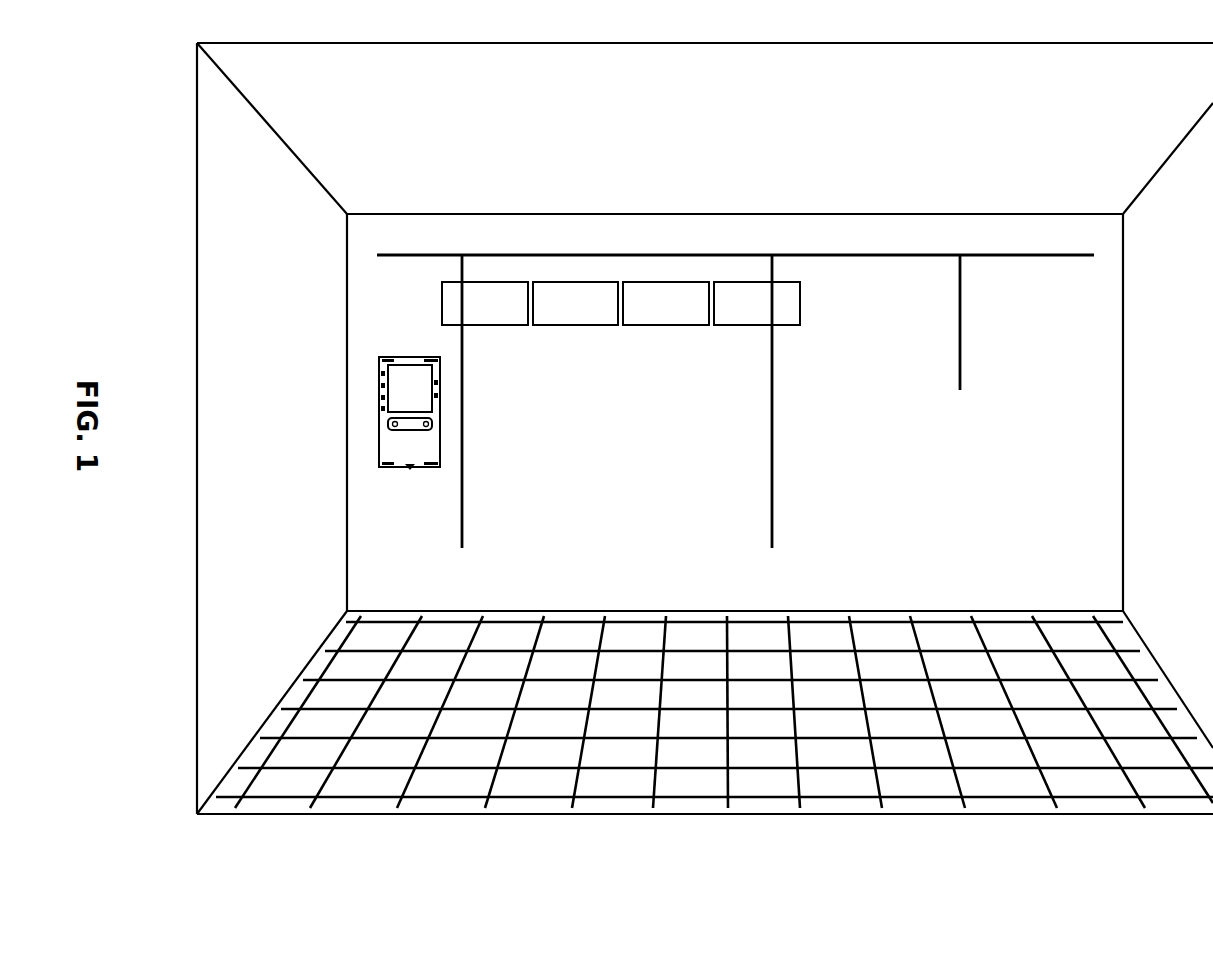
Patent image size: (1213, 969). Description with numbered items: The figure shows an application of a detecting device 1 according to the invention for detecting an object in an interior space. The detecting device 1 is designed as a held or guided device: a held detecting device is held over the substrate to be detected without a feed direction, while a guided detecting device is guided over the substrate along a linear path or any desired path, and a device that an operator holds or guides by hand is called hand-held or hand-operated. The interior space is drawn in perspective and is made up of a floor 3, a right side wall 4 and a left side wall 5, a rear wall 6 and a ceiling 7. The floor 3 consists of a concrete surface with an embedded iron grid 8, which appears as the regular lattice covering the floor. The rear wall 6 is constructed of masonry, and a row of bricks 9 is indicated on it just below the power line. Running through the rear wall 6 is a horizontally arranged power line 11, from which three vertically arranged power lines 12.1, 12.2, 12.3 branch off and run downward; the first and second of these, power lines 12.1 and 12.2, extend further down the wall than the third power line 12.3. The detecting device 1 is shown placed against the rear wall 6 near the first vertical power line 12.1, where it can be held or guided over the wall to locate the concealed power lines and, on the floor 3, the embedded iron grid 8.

The detecting device 1 is at (410, 386).
The floor 3 is at (1133, 732).
The right side wall 4 is at (1182, 409).
The left side wall 5 is at (268, 405).
The rear wall 6 is at (963, 533).
The ceiling 7 is at (735, 133).
The iron grid 8 is at (820, 742).
The bricks 9 is at (490, 298).
The horizontally arranged power line 11 is at (858, 258).
The first vertically arranged power line 12.1 is at (462, 490).
The second vertically arranged power line 12.2 is at (772, 490).
The third vertically arranged power line 12.3 is at (960, 325).